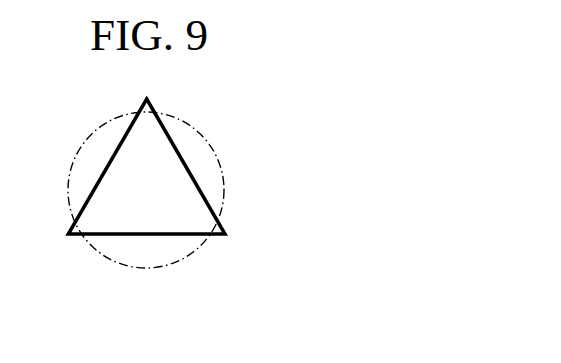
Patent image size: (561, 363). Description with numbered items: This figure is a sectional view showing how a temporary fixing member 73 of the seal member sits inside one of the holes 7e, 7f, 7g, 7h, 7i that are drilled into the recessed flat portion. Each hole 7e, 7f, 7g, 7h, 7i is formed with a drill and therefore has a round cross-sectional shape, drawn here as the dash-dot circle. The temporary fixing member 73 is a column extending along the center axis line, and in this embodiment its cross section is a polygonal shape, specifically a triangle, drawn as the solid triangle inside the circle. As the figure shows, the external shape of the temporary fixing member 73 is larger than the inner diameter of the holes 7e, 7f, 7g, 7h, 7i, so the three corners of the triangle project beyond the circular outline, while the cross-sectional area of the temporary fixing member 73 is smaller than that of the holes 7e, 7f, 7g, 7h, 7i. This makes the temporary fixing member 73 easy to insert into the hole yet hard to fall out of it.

The hole 7e is at (264, 182).
The hole 7f is at (264, 182).
The hole 7g is at (264, 182).
The hole 7h is at (264, 182).
The hole 7i is at (190, 128).
The temporary fixing member 73 is at (147, 234).